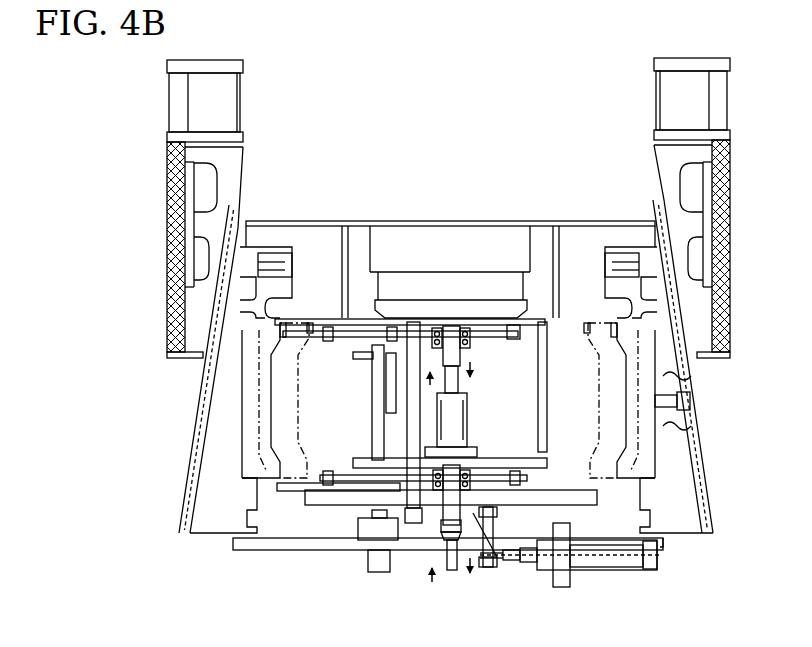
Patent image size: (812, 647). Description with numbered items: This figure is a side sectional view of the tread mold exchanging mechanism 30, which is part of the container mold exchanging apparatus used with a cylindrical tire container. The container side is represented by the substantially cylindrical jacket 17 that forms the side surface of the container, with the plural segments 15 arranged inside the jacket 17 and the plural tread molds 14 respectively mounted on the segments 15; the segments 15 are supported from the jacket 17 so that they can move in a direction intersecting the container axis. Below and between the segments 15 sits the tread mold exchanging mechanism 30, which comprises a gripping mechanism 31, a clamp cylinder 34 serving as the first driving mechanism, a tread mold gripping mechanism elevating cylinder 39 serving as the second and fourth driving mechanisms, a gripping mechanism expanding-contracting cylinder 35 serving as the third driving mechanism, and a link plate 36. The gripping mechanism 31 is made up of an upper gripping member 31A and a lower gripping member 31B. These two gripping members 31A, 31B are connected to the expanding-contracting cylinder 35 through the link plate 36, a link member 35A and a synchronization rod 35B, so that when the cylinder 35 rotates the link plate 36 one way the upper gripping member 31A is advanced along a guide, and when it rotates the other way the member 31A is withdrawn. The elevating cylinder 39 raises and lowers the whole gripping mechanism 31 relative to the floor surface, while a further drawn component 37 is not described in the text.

The tread mold 14 is at (657, 452).
The segment 15 is at (692, 502).
The jacket 17 is at (712, 315).
The tread mold exchanging mechanism 30 is at (357, 570).
The gripping mechanism 31 is at (371, 402).
The upper gripping member 31A is at (312, 328).
The lower gripping member 31B is at (315, 482).
The clamp cylinder 34 is at (470, 412).
The gripping mechanism expanding-contracting cylinder 35 is at (605, 563).
The link member 35A is at (497, 560).
The synchronization rod 35B is at (368, 458).
The link plate 36 is at (412, 318).
The guide rod 37 is at (345, 468).
The tread mold gripping mechanism elevating cylinder 39 is at (452, 572).